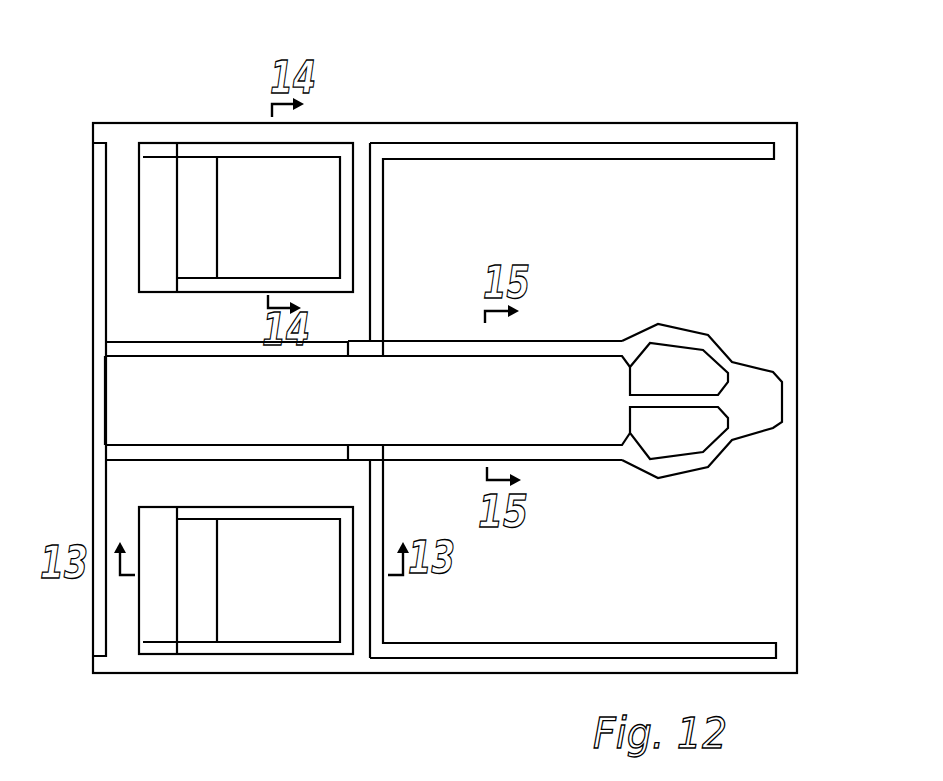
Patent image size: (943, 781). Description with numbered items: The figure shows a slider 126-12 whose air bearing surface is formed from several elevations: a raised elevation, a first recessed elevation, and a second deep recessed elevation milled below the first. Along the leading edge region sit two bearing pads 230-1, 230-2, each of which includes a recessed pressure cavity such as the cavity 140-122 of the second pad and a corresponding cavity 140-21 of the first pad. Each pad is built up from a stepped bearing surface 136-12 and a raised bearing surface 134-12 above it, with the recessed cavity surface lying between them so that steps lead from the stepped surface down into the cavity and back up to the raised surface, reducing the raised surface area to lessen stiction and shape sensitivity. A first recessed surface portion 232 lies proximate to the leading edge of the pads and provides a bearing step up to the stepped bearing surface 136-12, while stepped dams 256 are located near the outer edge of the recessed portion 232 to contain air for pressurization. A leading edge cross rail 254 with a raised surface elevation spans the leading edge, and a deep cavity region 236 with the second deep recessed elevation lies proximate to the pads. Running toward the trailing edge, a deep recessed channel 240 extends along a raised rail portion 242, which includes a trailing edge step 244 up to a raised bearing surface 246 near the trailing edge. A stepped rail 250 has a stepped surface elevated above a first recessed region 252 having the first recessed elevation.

The slider 126-12 is at (572, 116).
The stepped dams 256 is at (146, 142).
The leading edge cross rail 254 is at (106, 341).
The raised bearing surface 134-12 is at (353, 243).
The stepped rail 250 is at (662, 143).
The first recessed region 252 is at (692, 569).
The deep cavity region 236 is at (247, 499).
The deep recessed channel 240 is at (388, 412).
The raised rail portion 242 is at (558, 350).
The trailing edge step 244 is at (730, 360).
The raised bearing surface 246 is at (765, 399).
The bearing pad 230-1 is at (178, 126).
The bearing pad 230-2 is at (208, 670).
The first recessed surface portion 232 is at (145, 178).
The stepped bearing surface 136-12 is at (205, 167).
The first plate 140-21 is at (298, 180).
The recessed pressure cavity 140-122 is at (278, 618).